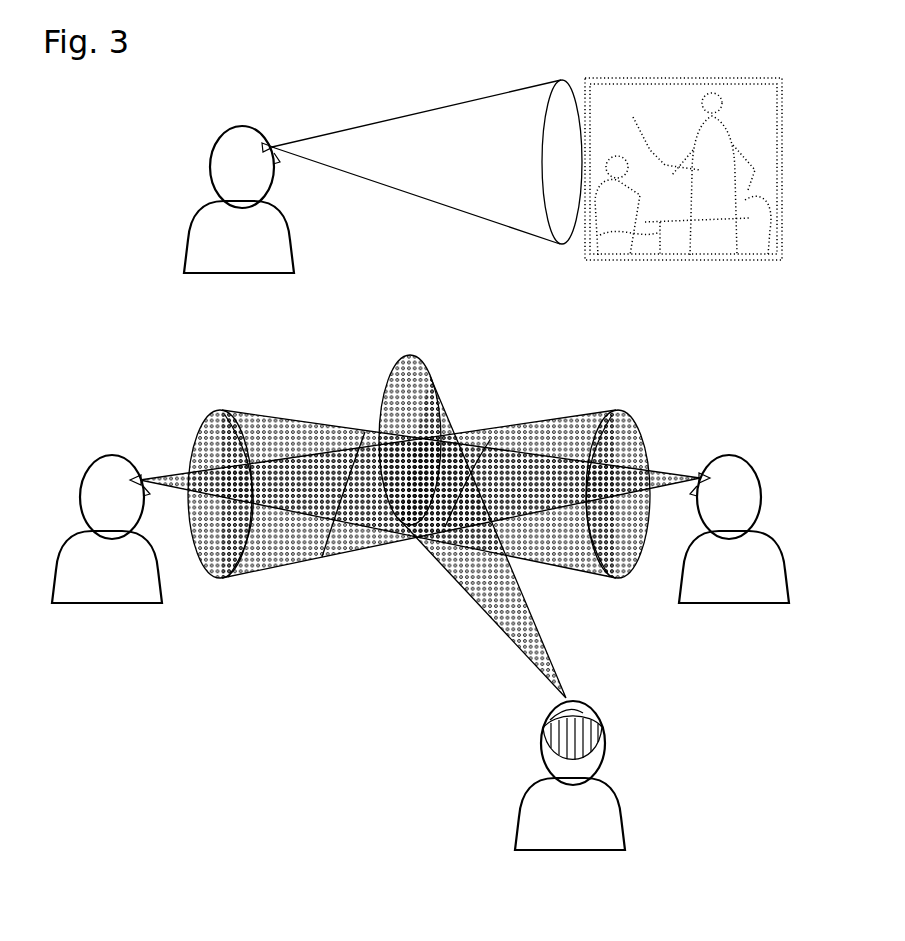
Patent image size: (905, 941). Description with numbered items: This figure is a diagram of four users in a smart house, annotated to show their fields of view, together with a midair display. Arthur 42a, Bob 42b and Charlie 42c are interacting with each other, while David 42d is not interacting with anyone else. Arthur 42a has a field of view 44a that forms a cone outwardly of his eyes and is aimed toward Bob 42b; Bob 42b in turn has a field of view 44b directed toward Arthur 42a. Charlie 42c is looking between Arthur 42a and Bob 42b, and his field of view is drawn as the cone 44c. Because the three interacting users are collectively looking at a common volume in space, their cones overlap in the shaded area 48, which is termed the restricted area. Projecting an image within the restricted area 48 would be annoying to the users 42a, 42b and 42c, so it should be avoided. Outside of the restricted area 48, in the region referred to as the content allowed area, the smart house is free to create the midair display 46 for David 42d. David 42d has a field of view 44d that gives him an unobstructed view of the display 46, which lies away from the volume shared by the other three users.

The Arthur 42a is at (97, 593).
The Bob 42b is at (768, 580).
The Charlie 42c is at (543, 813).
The David 42d is at (228, 263).
The field of view 44a is at (582, 415).
The field of view 44b is at (277, 420).
The cone 44c is at (455, 575).
The field of view 44d is at (433, 138).
The midair display 46 is at (708, 80).
The restricted area 48 is at (322, 557).